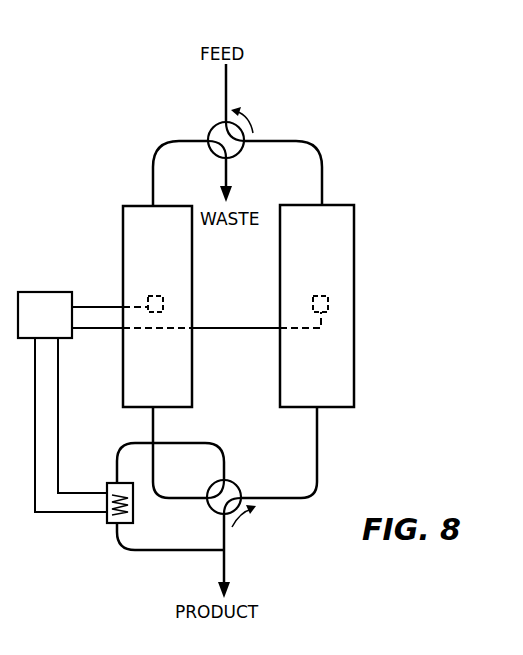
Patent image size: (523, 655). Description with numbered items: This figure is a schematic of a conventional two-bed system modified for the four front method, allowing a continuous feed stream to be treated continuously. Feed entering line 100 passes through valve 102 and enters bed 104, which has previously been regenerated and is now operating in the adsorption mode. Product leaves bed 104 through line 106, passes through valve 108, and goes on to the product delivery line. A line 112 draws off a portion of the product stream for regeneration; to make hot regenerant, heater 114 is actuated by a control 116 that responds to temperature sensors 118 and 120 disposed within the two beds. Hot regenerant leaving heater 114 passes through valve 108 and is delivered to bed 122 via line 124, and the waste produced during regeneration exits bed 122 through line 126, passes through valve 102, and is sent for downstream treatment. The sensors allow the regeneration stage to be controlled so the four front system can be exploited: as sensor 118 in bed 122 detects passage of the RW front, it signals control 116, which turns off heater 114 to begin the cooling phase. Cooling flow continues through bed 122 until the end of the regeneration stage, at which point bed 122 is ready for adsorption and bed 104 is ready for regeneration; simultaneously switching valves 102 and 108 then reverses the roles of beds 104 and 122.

The line 100 is at (227, 96).
The valve 102 is at (217, 127).
The bed 104 is at (357, 251).
The line 106 is at (317, 470).
The valve 108 is at (240, 482).
The line 112 is at (182, 552).
The heater 114 is at (110, 523).
The control 116 is at (169, 402).
The temperature sensor 118 is at (148, 298).
The temperature sensor 120 is at (328, 301).
The bed 122 is at (122, 360).
The line 124 is at (153, 428).
The line 126 is at (152, 175).